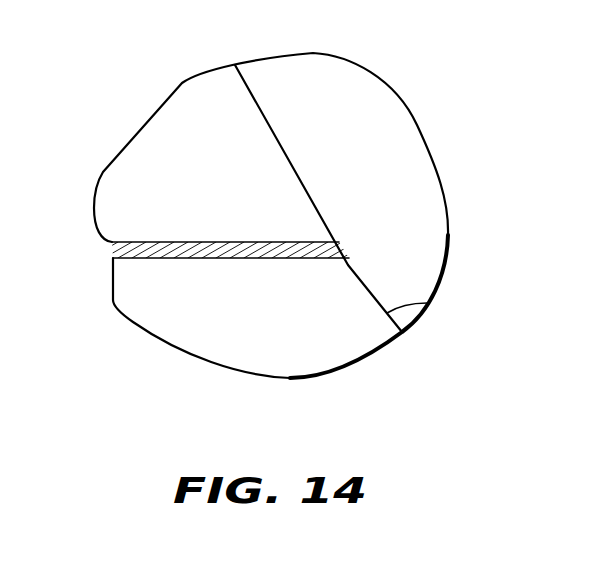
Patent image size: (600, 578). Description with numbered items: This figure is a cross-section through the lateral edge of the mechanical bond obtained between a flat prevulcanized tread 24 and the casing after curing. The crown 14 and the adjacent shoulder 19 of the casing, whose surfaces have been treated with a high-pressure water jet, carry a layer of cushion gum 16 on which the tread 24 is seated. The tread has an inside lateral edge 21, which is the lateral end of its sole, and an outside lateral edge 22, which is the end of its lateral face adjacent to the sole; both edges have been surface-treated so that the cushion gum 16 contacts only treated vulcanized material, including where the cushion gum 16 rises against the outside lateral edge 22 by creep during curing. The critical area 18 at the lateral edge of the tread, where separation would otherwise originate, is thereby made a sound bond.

The crown 14 is at (187, 258).
The cushion gum 16 is at (338, 252).
The critical area 18 is at (350, 222).
The shoulder 19 is at (427, 303).
The inside lateral edge 21 is at (369, 319).
The outside lateral edge 22 is at (320, 225).
The prevulcanized tread 24 is at (147, 163).